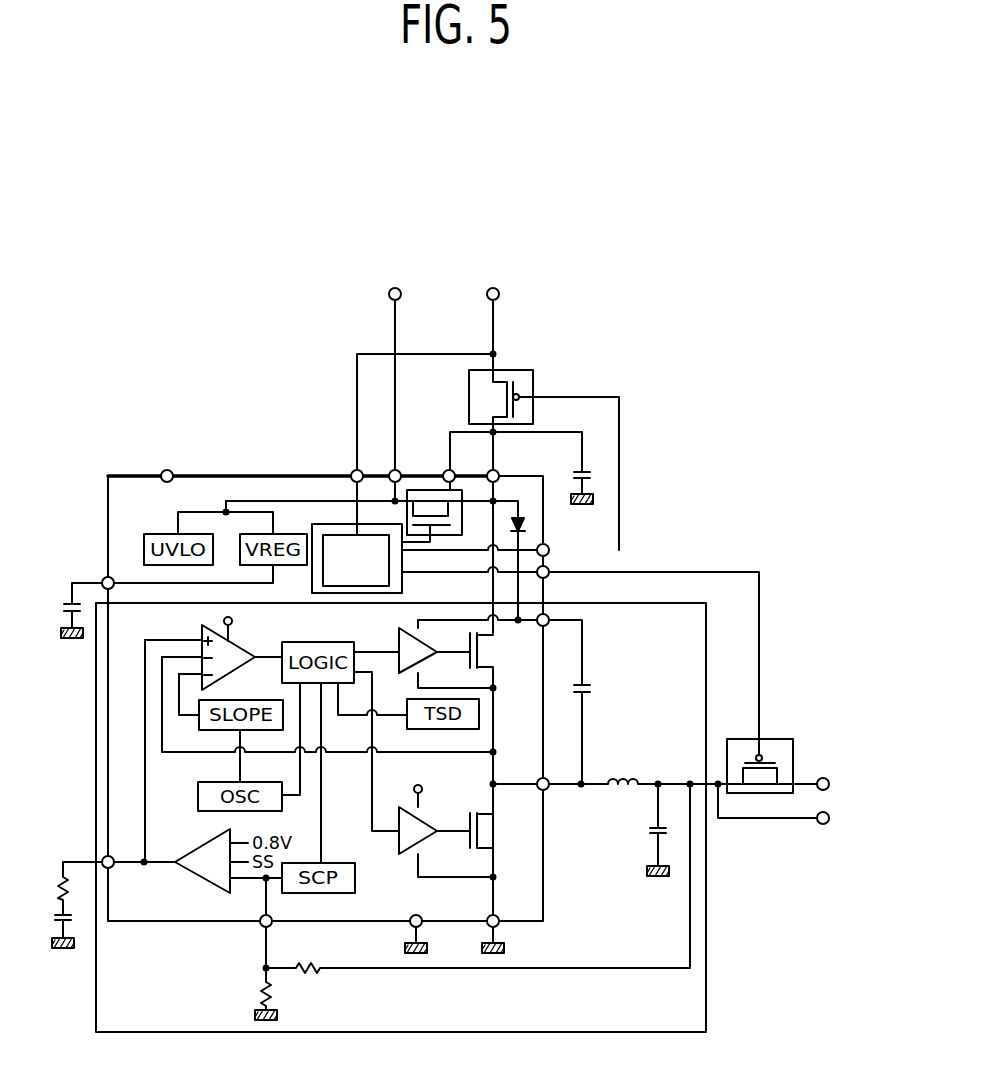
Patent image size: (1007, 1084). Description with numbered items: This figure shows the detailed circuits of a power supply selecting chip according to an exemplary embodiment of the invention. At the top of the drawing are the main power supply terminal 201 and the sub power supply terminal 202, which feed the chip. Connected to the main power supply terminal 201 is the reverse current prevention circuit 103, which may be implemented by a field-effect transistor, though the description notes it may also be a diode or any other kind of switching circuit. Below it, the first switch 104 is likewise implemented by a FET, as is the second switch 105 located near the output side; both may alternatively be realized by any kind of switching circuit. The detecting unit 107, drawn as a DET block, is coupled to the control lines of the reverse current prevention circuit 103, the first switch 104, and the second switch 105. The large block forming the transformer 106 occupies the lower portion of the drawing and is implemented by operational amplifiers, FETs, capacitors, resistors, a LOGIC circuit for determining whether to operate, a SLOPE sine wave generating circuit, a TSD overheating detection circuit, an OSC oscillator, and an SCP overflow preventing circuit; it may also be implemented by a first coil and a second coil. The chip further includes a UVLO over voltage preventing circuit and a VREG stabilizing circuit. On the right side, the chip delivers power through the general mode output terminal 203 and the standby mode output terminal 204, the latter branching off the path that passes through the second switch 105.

The reverse current prevention circuit 103 is at (524, 370).
The first switch 104 is at (432, 490).
The second switch 105 is at (782, 739).
The transformer 106 is at (706, 993).
The detecting unit 107 is at (333, 523).
The main power supply terminal 201 is at (493, 315).
The sub power supply terminal 202 is at (395, 380).
The general mode output terminal 203 is at (843, 784).
The standby mode output terminal 204 is at (843, 818).